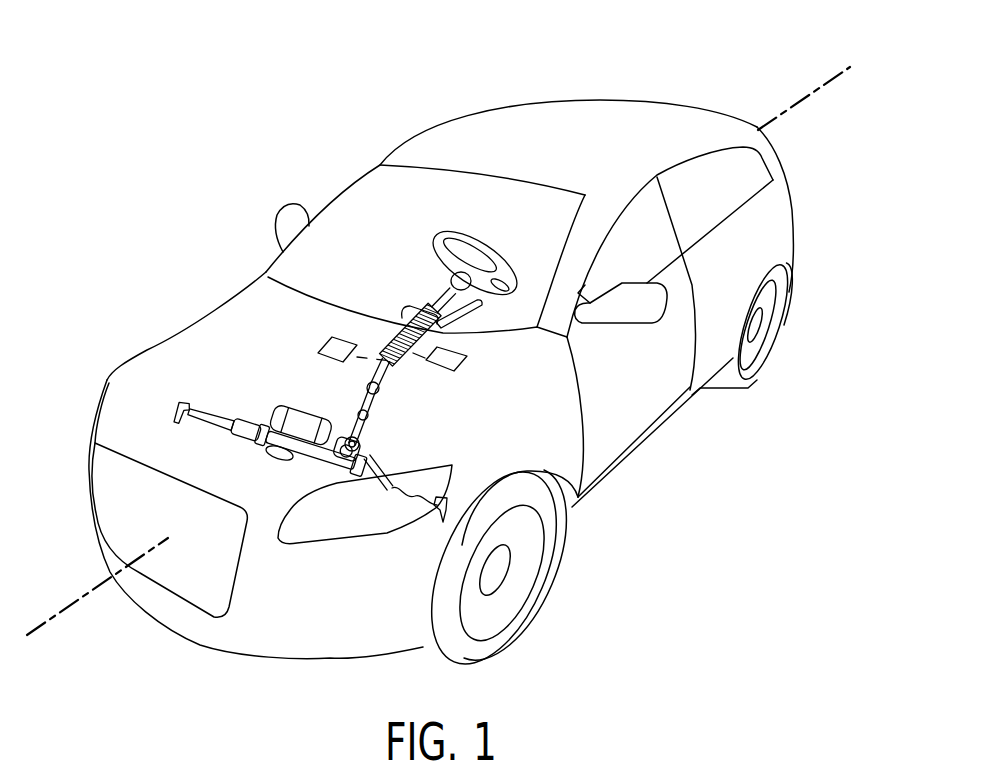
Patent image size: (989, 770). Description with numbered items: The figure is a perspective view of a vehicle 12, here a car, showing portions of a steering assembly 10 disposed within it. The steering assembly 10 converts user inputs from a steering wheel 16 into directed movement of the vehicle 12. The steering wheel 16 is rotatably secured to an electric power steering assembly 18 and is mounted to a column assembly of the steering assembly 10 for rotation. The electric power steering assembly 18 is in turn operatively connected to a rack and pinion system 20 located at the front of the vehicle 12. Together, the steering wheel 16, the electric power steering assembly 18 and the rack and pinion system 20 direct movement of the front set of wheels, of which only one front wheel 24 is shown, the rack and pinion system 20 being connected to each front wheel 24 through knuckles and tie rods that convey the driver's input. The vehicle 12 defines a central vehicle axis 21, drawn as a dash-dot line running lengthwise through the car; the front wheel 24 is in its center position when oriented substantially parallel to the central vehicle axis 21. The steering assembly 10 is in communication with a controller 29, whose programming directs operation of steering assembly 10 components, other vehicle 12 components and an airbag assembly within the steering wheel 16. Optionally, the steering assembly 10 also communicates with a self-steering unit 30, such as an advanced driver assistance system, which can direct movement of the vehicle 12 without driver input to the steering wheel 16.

The steering assembly 10 is at (361, 303).
The vehicle 12 is at (450, 351).
The steering wheel 16 is at (452, 233).
The electric power steering assembly 18 is at (420, 378).
The rack and pinion system 20 is at (400, 448).
The central vehicle axis 21 is at (802, 101).
The front wheel 24 is at (503, 649).
The controller 29 is at (328, 360).
The self-steering unit 30 is at (460, 368).